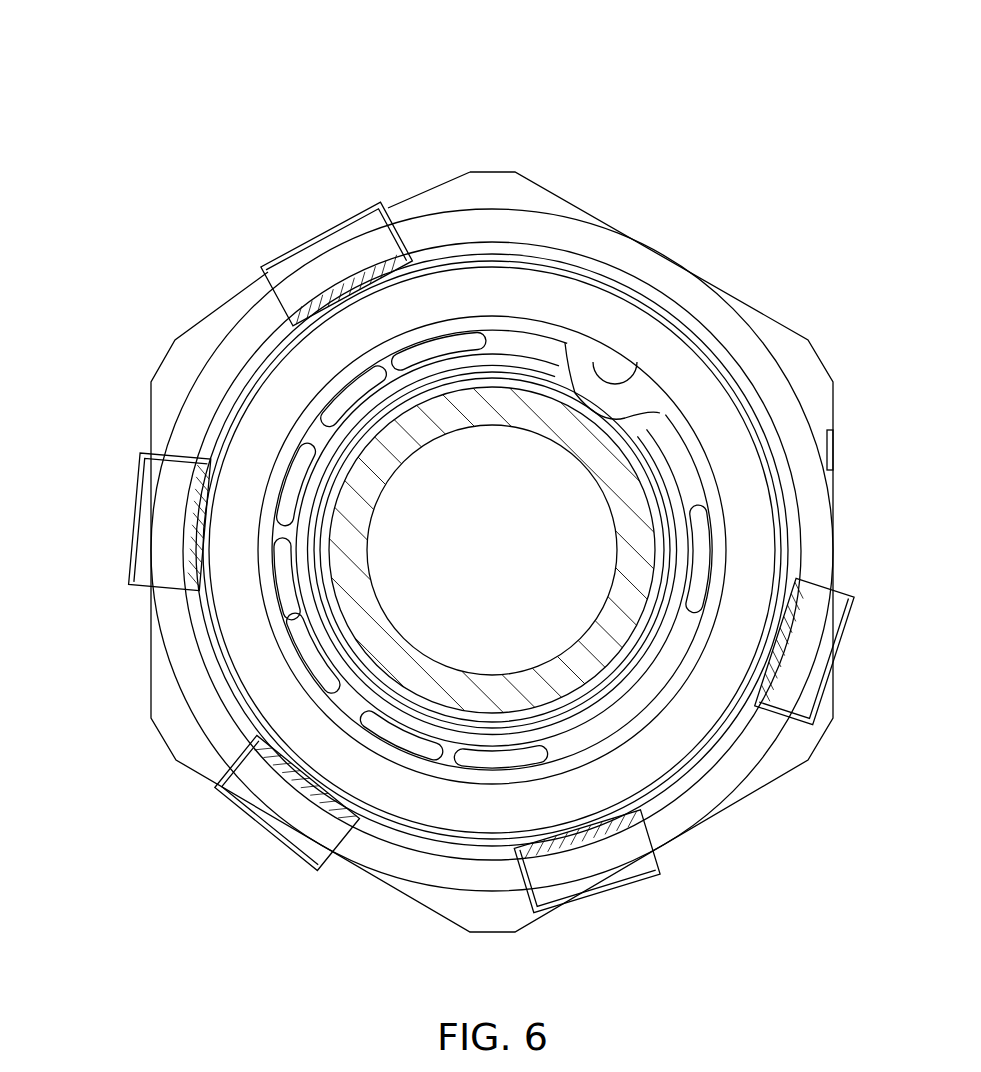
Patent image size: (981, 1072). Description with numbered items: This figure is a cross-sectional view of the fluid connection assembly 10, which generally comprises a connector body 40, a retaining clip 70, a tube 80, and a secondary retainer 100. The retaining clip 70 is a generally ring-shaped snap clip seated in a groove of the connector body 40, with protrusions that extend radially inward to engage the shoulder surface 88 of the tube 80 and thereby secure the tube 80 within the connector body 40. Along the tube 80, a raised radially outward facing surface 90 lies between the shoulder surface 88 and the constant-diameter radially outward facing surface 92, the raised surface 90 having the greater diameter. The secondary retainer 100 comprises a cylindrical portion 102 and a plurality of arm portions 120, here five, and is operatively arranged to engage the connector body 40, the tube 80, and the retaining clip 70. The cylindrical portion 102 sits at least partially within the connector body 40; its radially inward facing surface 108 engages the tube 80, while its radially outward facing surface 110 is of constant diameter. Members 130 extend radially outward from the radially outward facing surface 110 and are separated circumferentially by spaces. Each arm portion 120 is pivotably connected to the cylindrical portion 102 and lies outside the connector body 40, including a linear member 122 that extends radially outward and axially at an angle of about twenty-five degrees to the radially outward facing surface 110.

The fluid connection assembly 10 is at (807, 101).
The connector body 40 is at (445, 907).
The retaining clip 70 is at (637, 407).
The tube 80 is at (670, 580).
The shoulder surface 88 is at (672, 437).
The radially outward facing surface 90 is at (625, 595).
The radially outward facing surface 92 is at (600, 667).
The secondary retainer 100 is at (320, 255).
The cylindrical portion 102 is at (450, 742).
The radially inward facing surface 108 is at (295, 632).
The radially outward facing surface 110 is at (292, 586).
The arm portion 120 is at (255, 778).
The member 122 is at (162, 483).
The member 130 is at (292, 466).